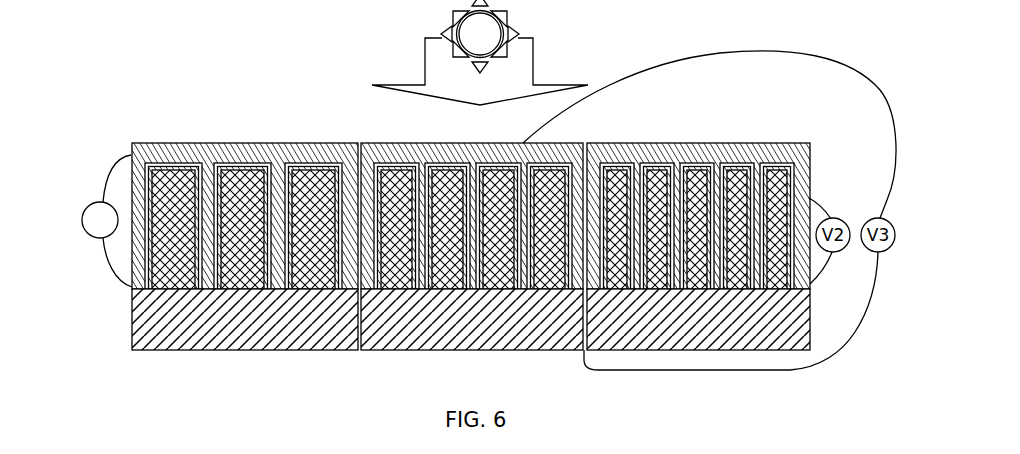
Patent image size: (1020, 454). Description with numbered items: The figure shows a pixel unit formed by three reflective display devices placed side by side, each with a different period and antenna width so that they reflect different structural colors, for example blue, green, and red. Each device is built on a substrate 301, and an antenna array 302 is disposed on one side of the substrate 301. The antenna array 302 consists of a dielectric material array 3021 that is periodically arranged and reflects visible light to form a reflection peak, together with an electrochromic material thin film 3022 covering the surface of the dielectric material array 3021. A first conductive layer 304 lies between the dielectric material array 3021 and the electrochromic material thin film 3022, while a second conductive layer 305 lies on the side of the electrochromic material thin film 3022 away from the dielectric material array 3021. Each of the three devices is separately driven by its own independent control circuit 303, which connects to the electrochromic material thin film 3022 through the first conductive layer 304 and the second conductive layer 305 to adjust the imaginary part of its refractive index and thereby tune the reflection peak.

The substrate 301 is at (250, 335).
The antenna array 302 is at (509, 185).
The dielectric material array 3021 is at (733, 172).
The electrochromic material thin film 3022 is at (726, 170).
The control circuit 303 is at (81, 211).
The first conductive layer 304 is at (167, 168).
The second conductive layer 305 is at (157, 149).